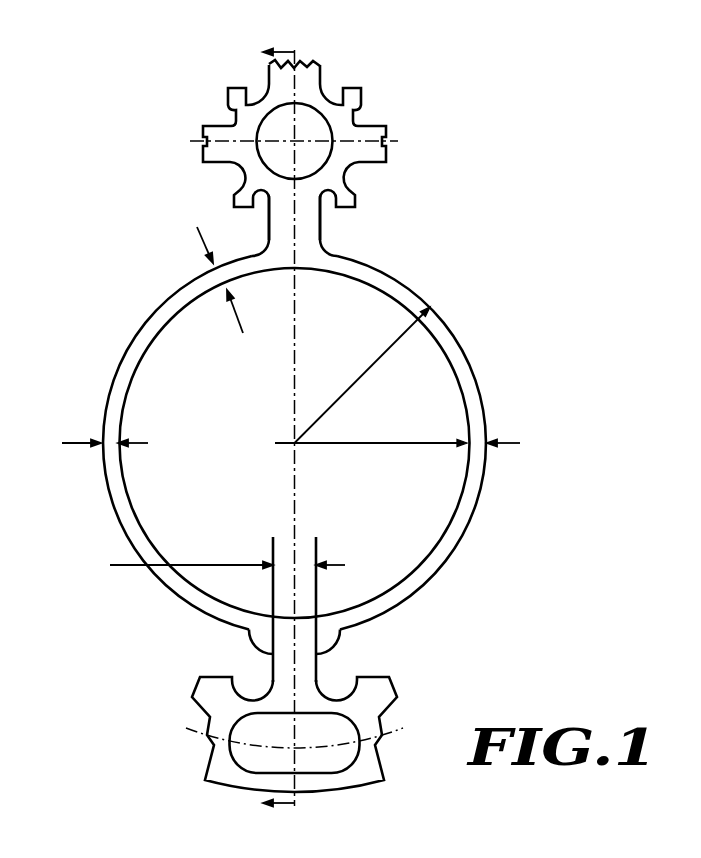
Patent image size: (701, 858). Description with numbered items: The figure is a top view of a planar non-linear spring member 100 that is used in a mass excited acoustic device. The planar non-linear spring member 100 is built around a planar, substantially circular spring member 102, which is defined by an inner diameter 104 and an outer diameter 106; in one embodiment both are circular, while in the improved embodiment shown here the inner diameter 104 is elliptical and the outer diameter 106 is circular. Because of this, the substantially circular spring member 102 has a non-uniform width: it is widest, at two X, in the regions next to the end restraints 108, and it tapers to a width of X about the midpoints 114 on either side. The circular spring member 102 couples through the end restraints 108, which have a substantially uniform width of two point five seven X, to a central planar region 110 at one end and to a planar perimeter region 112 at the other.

The planar non-linear spring member 100 is at (315, 428).
The substantially circular spring member 102 is at (457, 335).
The inner diameter 104 is at (371, 458).
The outer diameter 106 is at (363, 375).
The end restraints 108 is at (322, 232).
The central planar region 110 is at (300, 130).
The planar perimeter region 112 is at (393, 720).
The midpoints 114 is at (339, 446).